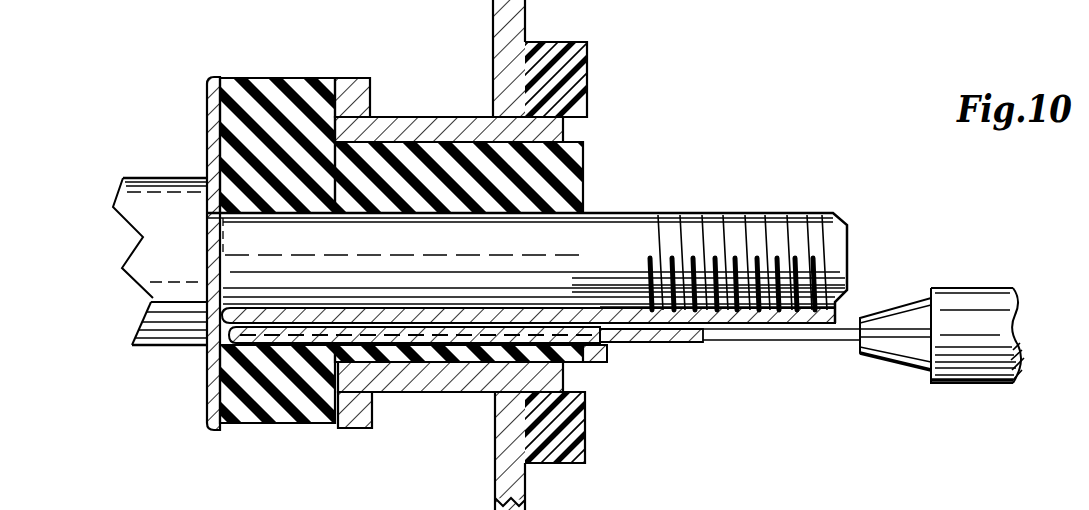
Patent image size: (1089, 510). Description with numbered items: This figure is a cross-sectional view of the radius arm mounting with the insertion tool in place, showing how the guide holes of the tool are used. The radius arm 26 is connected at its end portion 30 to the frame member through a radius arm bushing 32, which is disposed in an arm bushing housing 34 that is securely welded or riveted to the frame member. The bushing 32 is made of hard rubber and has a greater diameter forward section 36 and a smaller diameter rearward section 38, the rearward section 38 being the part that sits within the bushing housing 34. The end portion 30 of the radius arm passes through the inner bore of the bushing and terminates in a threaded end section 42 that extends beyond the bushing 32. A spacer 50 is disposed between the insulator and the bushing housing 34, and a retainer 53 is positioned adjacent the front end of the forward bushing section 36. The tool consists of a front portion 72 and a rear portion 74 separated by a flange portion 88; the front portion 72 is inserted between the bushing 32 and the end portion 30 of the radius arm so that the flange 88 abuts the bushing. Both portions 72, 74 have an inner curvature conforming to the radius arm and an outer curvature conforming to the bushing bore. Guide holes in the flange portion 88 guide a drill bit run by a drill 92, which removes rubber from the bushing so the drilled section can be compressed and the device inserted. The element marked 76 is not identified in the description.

The radius arm 26 is at (176, 350).
The end portion of the radius arm 30 is at (580, 233).
The radius arm bushing 32 is at (312, 78).
The arm bushing housing 34 is at (392, 117).
The greater diameter forward section 36 is at (265, 92).
The smaller diameter rearward section 38 is at (433, 153).
The threaded end section 42 is at (753, 240).
The spacer 50 is at (571, 465).
The retainer 53 is at (217, 424).
The front portion 72 is at (405, 318).
The rear portion 74 is at (760, 317).
The rod section 76 is at (605, 347).
The flange portion 88 is at (597, 364).
The drill 92 is at (962, 383).